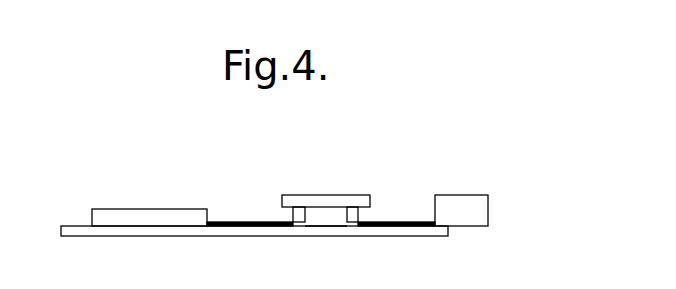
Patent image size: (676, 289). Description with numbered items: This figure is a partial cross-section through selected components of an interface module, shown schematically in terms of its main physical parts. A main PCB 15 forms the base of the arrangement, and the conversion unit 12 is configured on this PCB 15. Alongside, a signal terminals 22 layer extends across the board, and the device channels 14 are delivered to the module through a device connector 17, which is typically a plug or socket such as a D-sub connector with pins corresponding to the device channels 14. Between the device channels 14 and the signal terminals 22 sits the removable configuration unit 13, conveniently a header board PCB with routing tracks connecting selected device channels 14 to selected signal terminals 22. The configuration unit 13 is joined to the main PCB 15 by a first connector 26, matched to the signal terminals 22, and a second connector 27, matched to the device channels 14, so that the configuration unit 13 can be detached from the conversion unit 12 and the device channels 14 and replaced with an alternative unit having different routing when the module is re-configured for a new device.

The conversion unit 12 is at (122, 209).
The configuration unit 13 is at (330, 195).
The device channels 14 is at (414, 202).
The PCB 15 is at (88, 237).
The device connector 17 is at (467, 195).
The signal terminals 22 is at (245, 198).
The first connector 26 is at (300, 218).
The second connector 27 is at (353, 218).